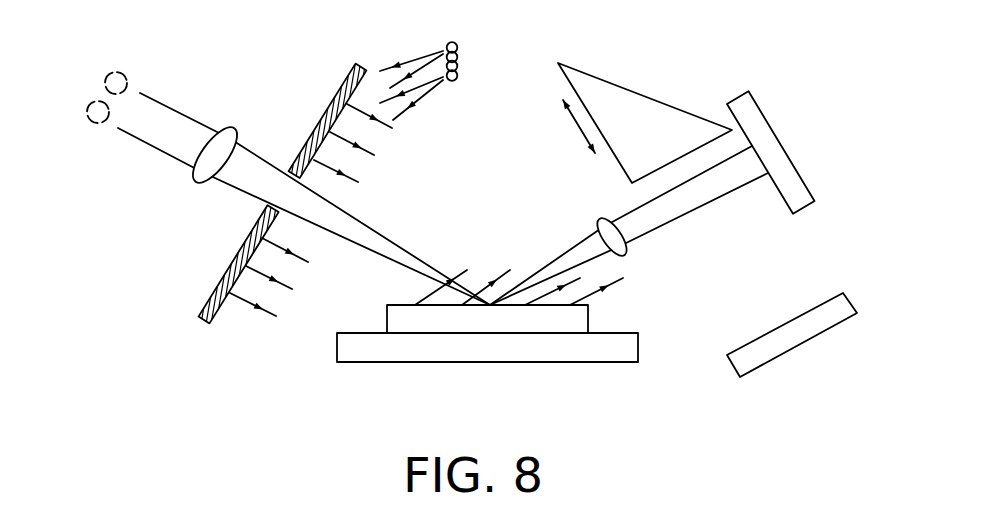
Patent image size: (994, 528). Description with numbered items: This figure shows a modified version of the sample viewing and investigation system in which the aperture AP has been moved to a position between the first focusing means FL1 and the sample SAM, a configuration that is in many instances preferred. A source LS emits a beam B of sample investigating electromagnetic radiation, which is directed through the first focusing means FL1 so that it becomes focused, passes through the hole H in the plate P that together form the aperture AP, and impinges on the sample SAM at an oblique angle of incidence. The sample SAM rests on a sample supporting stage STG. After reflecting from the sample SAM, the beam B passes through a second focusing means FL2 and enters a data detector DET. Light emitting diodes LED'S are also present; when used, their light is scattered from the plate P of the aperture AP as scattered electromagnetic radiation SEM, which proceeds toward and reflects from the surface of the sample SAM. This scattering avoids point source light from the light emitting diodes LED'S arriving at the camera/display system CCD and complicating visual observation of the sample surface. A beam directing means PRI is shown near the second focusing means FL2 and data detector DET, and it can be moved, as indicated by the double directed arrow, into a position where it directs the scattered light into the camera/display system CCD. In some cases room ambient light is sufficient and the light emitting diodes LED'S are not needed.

The source LS is at (106, 62).
The beam B is at (172, 138).
The first focusing means FL1 is at (238, 120).
The aperture AP is at (340, 62).
The hole H is at (286, 189).
The plate P is at (205, 290).
The light emitting diodes LED'S is at (511, 55).
The scattered electromagnetic radiation SEM is at (380, 144).
The sample SAM is at (513, 326).
The sample supporting stage STG is at (515, 356).
The second focusing means FL2 is at (596, 213).
The beam directing means PRI is at (611, 72).
The data detector DET is at (789, 122).
The camera/display system CCD is at (793, 370).